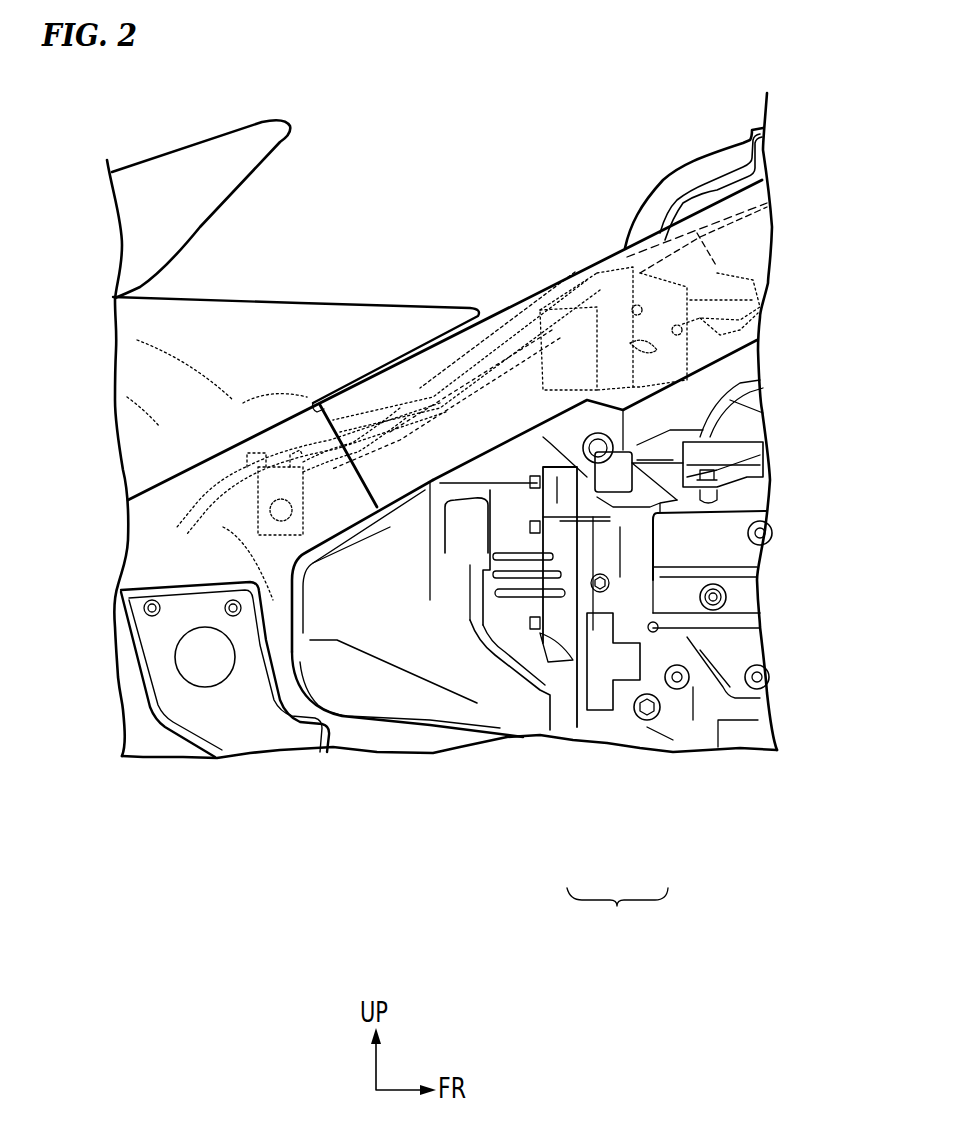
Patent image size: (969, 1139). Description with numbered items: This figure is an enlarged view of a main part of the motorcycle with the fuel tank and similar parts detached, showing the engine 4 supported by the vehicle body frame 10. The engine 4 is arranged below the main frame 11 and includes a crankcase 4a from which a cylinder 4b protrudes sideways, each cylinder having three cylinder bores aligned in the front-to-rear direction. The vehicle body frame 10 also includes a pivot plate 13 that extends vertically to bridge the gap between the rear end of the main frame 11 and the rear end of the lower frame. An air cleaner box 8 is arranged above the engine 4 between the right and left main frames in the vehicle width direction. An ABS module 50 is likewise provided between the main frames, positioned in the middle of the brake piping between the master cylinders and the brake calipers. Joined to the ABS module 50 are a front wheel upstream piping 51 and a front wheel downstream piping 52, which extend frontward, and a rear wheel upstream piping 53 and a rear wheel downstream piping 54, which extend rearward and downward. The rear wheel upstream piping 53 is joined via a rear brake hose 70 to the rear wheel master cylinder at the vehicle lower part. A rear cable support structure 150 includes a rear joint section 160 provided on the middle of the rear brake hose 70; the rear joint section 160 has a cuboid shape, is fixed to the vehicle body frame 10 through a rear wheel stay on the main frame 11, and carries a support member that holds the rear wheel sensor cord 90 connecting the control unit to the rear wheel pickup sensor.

The engine 4 is at (617, 915).
The crankcase 4a is at (630, 627).
The cylinder 4b is at (733, 647).
The air cleaner box 8 is at (673, 172).
The vehicle body frame 10 is at (615, 301).
The main frame 11 is at (517, 320).
The pivot plate 13 is at (193, 713).
The ABS module 50 is at (593, 267).
The front wheel upstream piping 51 is at (750, 277).
The front wheel downstream piping 52 is at (758, 313).
The rear wheel upstream piping 53 is at (391, 360).
The rear wheel downstream piping 54 is at (428, 485).
The rear brake hose 70 is at (281, 600).
The rear wheel sensor cord 90 is at (195, 505).
The rear cable support structure 150 is at (273, 410).
The rear joint section 160 is at (340, 530).